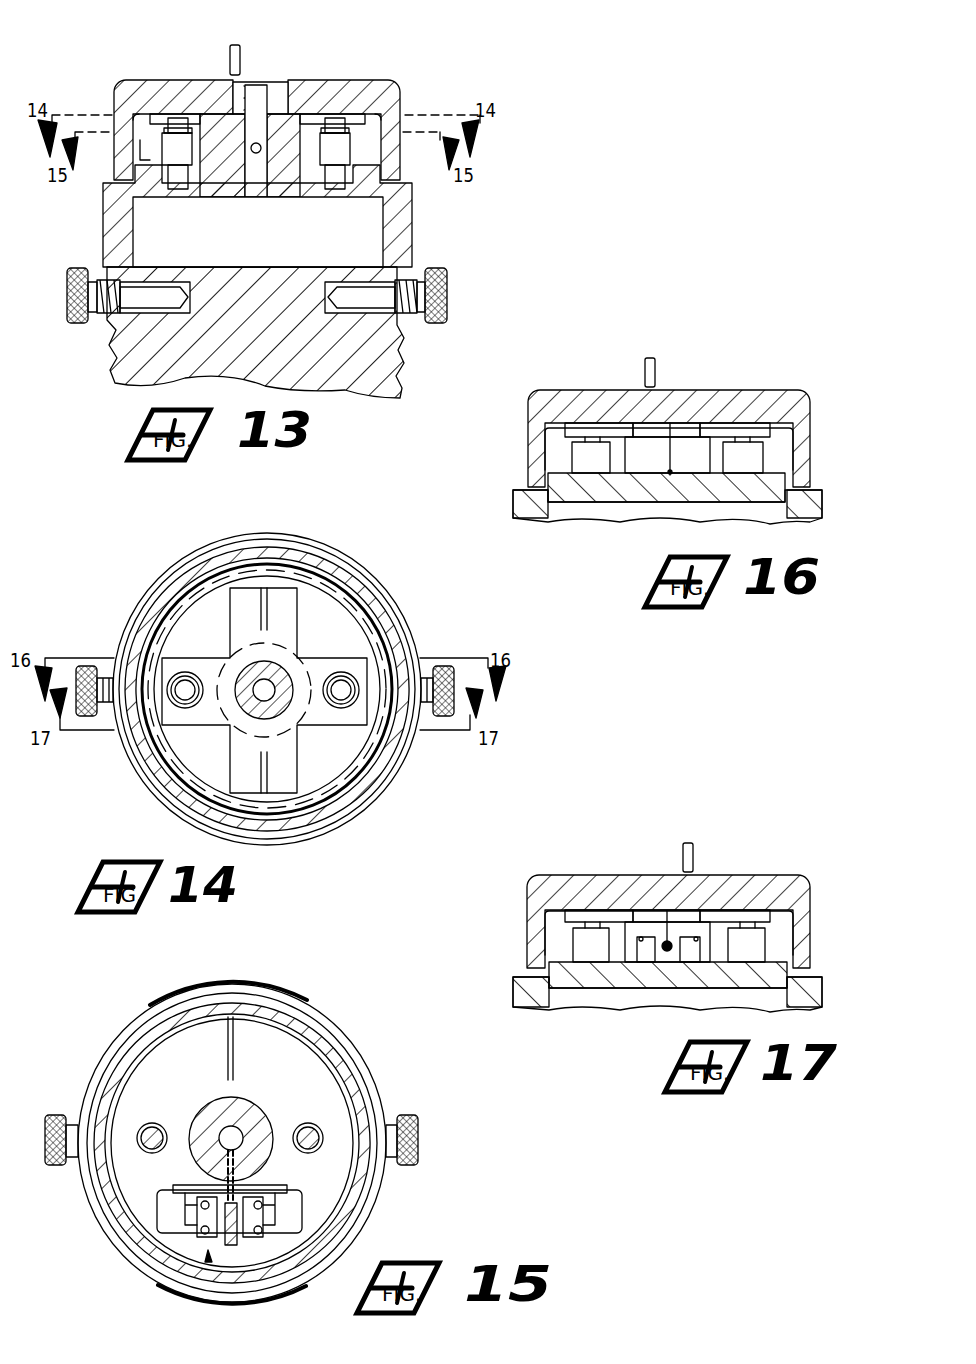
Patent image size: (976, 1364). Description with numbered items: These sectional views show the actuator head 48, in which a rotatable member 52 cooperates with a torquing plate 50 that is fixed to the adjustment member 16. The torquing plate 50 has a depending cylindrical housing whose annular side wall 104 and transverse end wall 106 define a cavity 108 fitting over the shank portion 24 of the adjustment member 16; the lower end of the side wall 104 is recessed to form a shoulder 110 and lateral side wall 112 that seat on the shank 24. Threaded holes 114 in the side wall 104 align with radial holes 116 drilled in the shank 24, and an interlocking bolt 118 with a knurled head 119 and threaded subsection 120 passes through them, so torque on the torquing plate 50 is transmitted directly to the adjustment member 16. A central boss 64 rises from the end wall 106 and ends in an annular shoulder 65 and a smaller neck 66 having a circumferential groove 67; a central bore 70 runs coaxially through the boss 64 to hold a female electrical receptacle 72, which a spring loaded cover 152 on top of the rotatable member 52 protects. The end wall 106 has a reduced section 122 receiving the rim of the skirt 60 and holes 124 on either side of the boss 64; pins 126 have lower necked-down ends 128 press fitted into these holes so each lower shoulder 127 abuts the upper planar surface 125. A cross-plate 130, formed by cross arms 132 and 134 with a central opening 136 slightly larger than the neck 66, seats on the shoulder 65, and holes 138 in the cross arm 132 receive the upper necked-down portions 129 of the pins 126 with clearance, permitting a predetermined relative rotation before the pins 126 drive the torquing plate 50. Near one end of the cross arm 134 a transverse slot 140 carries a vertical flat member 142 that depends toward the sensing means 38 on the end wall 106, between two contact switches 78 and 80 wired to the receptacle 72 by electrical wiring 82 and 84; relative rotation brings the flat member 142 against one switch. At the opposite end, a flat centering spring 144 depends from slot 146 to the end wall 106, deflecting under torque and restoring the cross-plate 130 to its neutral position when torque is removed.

In FIG. 13, the adjustment member 16 is at (105, 383).
In FIG. 13, the shank portion 24 is at (150, 276).
In FIG. 15, the sensing means 38 is at (207, 1264).
In FIG. 13, the actuator head 48 is at (226, 103).
In FIG. 16, the actuator head 48 is at (670, 415).
In FIG. 15, the torquing plate 50 is at (318, 1012).
In FIG. 13, the rotatable member 52 is at (150, 80).
In FIG. 16, the rotatable member 52 is at (651, 420).
In FIG. 17, the rotatable member 52 is at (641, 912).
In FIG. 14, the rotatable member 52 is at (267, 689).
In FIG. 15, the rotatable member 52 is at (338, 1038).
In FIG. 16, the skirt 60 is at (530, 447).
In FIG. 17, the skirt 60 is at (528, 912).
In FIG. 13, the boss 64 is at (328, 97).
In FIG. 17, the boss 64 is at (712, 925).
In FIG. 15, the boss 64 is at (232, 1110).
In FIG. 13, the annular shoulder 65 is at (318, 110).
In FIG. 13, the neck 66 is at (303, 125).
In FIG. 16, the neck 66 is at (690, 430).
In FIG. 17, the neck 66 is at (690, 915).
In FIG. 14, the neck 66 is at (272, 660).
In FIG. 16, the circumferential groove 67 is at (675, 445).
In FIG. 15, the central bore 70 is at (232, 1125).
In FIG. 13, the female electrical receptacle 72 is at (258, 90).
In FIG. 17, the contact switch 78 is at (645, 965).
In FIG. 15, the contact switch 78 is at (195, 1237).
In FIG. 17, the contact switch 80 is at (688, 965).
In FIG. 15, the contact switch 80 is at (250, 1239).
In FIG. 15, the electrical wiring 82 is at (185, 1185).
In FIG. 15, the electrical wiring 84 is at (160, 1212).
In FIG. 13, the annular side wall 104 is at (295, 216).
In FIG. 16, the annular side wall 104 is at (822, 512).
In FIG. 17, the annular side wall 104 is at (822, 1003).
In FIG. 13, the transverse end wall 106 is at (372, 185).
In FIG. 16, the transverse end wall 106 is at (572, 490).
In FIG. 17, the transverse end wall 106 is at (572, 978).
In FIG. 13, the cavity 108 is at (402, 238).
In FIG. 13, the shoulder 110 is at (108, 232).
In FIG. 13, the lateral side wall 112 is at (112, 360).
In FIG. 13, the threaded holes 114 is at (105, 262).
In FIG. 13, the radial holes 116 is at (186, 372).
In FIG. 13, the interlocking bolt 118 is at (92, 312).
In FIG. 14, the interlocking bolt 118 is at (105, 676).
In FIG. 15, the interlocking bolt 118 is at (72, 1124).
In FIG. 13, the knurled head 119 is at (68, 298).
In FIG. 14, the knurled head 119 is at (86, 665).
In FIG. 15, the knurled head 119 is at (56, 1115).
In FIG. 13, the threaded subsection 120 is at (100, 280).
In FIG. 16, the reduced section 122 is at (548, 488).
In FIG. 17, the reduced section 122 is at (787, 980).
In FIG. 13, the holes 124 is at (328, 200).
In FIG. 13, the upper planar surface 125 is at (140, 150).
In FIG. 16, the upper planar surface 125 is at (785, 478).
In FIG. 13, the pin 126 is at (200, 160).
In FIG. 16, the pin 126 is at (572, 458).
In FIG. 17, the pin 126 is at (572, 947).
In FIG. 13, the lower shoulder 127 is at (178, 189).
In FIG. 13, the lower necked-down end 128 is at (196, 197).
In FIG. 13, the upper necked-down portion 129 is at (178, 117).
In FIG. 17, the upper necked-down portion 129 is at (572, 930).
In FIG. 14, the upper necked-down portion 129 is at (220, 650).
In FIG. 15, the upper necked-down portion 129 is at (154, 1127).
In FIG. 14, the cross-plate 130 is at (305, 605).
In FIG. 16, the cross arm 132 is at (600, 428).
In FIG. 17, the cross arm 132 is at (600, 915).
In FIG. 14, the cross arm 132 is at (152, 768).
In FIG. 16, the cross arm 134 is at (645, 437).
In FIG. 17, the cross arm 134 is at (650, 920).
In FIG. 14, the cross arm 134 is at (220, 610).
In FIG. 13, the central opening 136 is at (248, 110).
In FIG. 13, the holes 138 is at (165, 128).
In FIG. 14, the holes 138 is at (183, 708).
In FIG. 15, the holes 138 is at (140, 1125).
In FIG. 14, the transverse slot 140 is at (295, 818).
In FIG. 17, the flat member 142 is at (665, 930).
In FIG. 14, the flat member 142 is at (250, 838).
In FIG. 15, the flat member 142 is at (232, 1245).
In FIG. 16, the centering spring 144 is at (700, 440).
In FIG. 14, the centering spring 144 is at (300, 588).
In FIG. 15, the centering spring 144 is at (198, 996).
In FIG. 14, the slot 146 is at (260, 585).
In FIG. 15, the slot 146 is at (232, 1015).
In FIG. 13, the spring loaded cover 152 is at (233, 48).